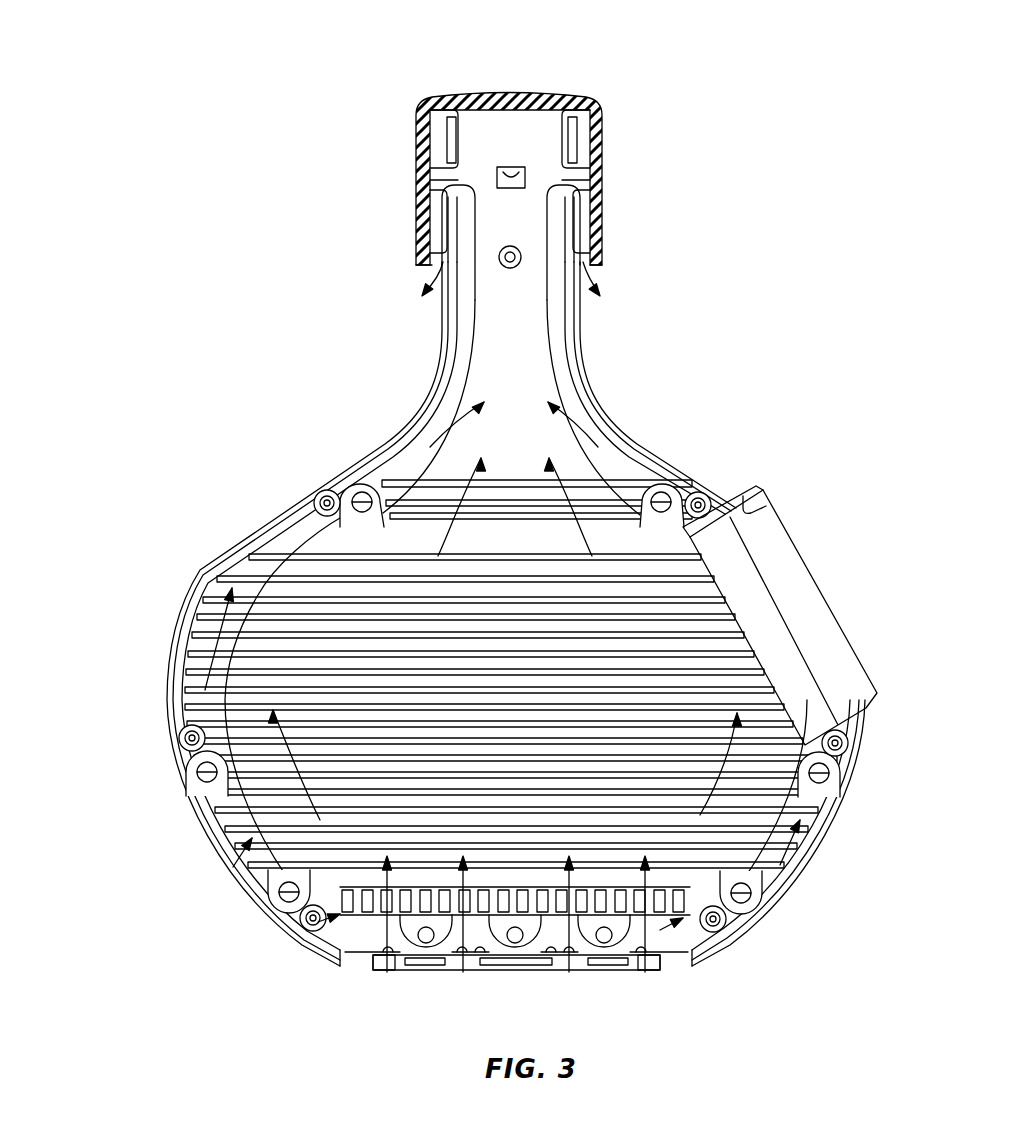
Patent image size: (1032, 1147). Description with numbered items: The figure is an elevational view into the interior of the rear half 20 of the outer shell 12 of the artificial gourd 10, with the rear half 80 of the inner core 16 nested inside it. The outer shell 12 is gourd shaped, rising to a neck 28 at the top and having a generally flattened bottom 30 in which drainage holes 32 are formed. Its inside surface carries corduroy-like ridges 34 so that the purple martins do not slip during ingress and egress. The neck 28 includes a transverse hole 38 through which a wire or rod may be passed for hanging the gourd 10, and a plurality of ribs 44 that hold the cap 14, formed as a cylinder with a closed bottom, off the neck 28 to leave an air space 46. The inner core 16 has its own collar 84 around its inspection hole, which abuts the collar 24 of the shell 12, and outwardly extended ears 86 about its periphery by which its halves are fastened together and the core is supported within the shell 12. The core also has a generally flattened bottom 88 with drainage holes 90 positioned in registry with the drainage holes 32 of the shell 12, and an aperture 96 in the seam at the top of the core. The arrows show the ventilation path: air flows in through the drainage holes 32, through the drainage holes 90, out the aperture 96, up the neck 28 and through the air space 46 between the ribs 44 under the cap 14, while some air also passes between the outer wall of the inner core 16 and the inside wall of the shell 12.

The artificial gourd 10 is at (727, 337).
The outer shell 12 is at (180, 790).
The cap 14 is at (603, 138).
The inner core 16 is at (258, 843).
The rear half 20 is at (170, 668).
The collar 24 is at (772, 493).
The neck 28 is at (455, 305).
The flattened bottom 30 is at (510, 965).
The drainage holes 32 is at (460, 965).
The corduroy-like ridges 34 is at (216, 612).
The transverse hole 38 is at (515, 170).
The ribs 44 is at (425, 212).
The air space 46 is at (602, 272).
The rear half 80 is at (300, 548).
The collar 84 is at (707, 535).
The ears 86 is at (750, 892).
The flattened bottom 88 is at (335, 960).
The drainage holes 90 is at (650, 965).
The aperture 96 is at (445, 478).